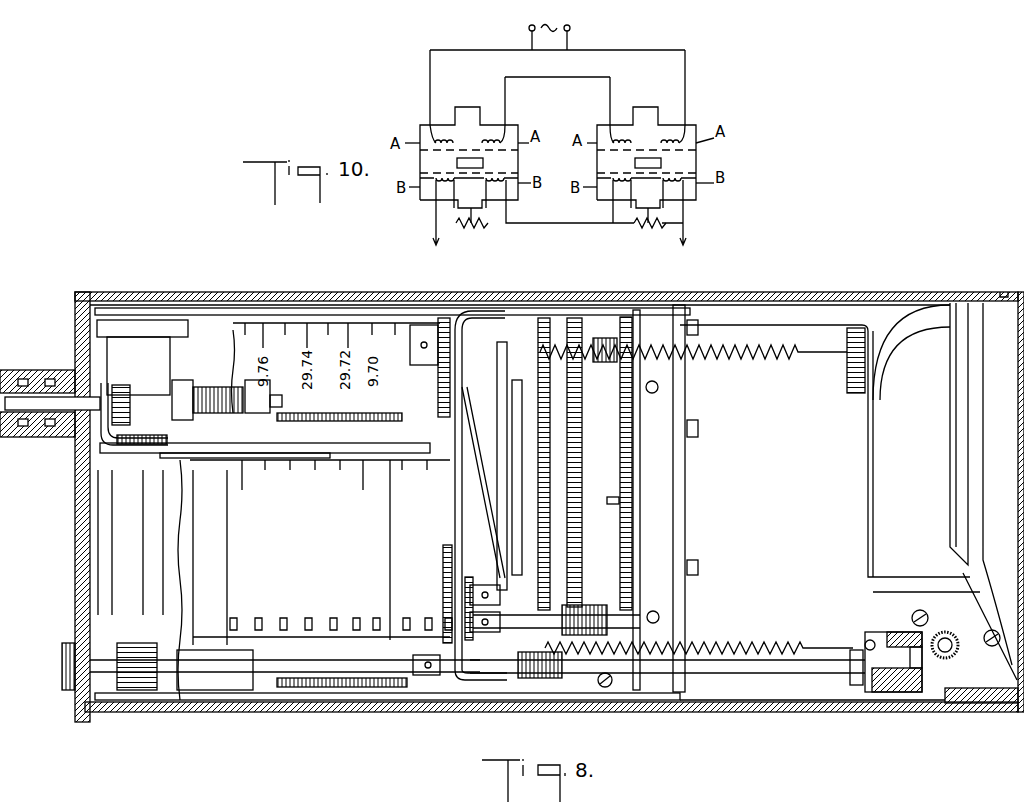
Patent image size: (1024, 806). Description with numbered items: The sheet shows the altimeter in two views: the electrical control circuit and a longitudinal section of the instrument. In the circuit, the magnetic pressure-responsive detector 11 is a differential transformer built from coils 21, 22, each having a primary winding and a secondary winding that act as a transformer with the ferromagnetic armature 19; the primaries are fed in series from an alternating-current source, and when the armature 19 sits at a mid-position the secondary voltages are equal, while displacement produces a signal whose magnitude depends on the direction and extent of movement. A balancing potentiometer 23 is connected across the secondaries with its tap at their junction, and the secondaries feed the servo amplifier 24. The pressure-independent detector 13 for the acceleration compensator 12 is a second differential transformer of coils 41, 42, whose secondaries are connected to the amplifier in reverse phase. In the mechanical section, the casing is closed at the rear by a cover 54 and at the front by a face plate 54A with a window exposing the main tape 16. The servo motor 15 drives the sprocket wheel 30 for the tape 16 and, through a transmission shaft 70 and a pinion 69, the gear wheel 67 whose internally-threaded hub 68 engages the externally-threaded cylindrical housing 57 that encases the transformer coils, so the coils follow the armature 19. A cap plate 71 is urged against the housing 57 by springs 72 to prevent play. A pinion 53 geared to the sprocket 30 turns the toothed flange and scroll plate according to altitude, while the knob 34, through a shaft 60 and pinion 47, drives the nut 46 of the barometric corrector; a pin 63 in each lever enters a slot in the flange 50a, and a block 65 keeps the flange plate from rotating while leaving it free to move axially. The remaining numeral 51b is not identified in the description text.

In FIG. 10, the magnetic pressure-responsive transducer or detector 11 is at (465, 125).
In FIG. 10, the magnetic pressure-independent transducer or detector 13 is at (645, 125).
In FIG. 10, the coil 21 is at (440, 140).
In FIG. 10, the coil 22 is at (493, 140).
In FIG. 10, the coil 41 is at (613, 140).
In FIG. 10, the coil 42 is at (672, 140).
In FIG. 10, the armature 19 is at (483, 163).
In FIG. 10, the acceleration compensator 12 is at (661, 163).
In FIG. 10, the balancing potentiometer 23 is at (476, 227).
In FIG. 10, the frame 24 is at (564, 258).
In FIG. 8, the knob 34 is at (35, 370).
In FIG. 8, the face plate 54A is at (75, 538).
In FIG. 8, the cover 54 is at (996, 708).
In FIG. 8, the servo motor 15 is at (927, 347).
In FIG. 8, the sprocket wheel 30 is at (97, 627).
In FIG. 8, the main tape indicator 16 is at (274, 620).
In FIG. 8, the shaft 60 is at (483, 348).
In FIG. 8, the gear wheel 67 is at (543, 320).
In FIG. 8, the pinion 47 is at (605, 338).
In FIG. 8, the cap plate 71 is at (490, 410).
In FIG. 8, the cylindrical housing 57 is at (522, 437).
In FIG. 8, the hub 68 is at (558, 387).
In FIG. 8, the nut 46 is at (640, 408).
In FIG. 8, the springs 72 is at (770, 363).
In FIG. 8, the pin 63 is at (617, 500).
In FIG. 8, the flange 50a is at (640, 513).
In FIG. 8, the rack 51b is at (585, 553).
In FIG. 8, the pinion 53 is at (607, 607).
In FIG. 8, the pinion 69 is at (533, 678).
In FIG. 8, the block 65 is at (603, 687).
In FIG. 8, the transmission shaft 70 is at (747, 673).